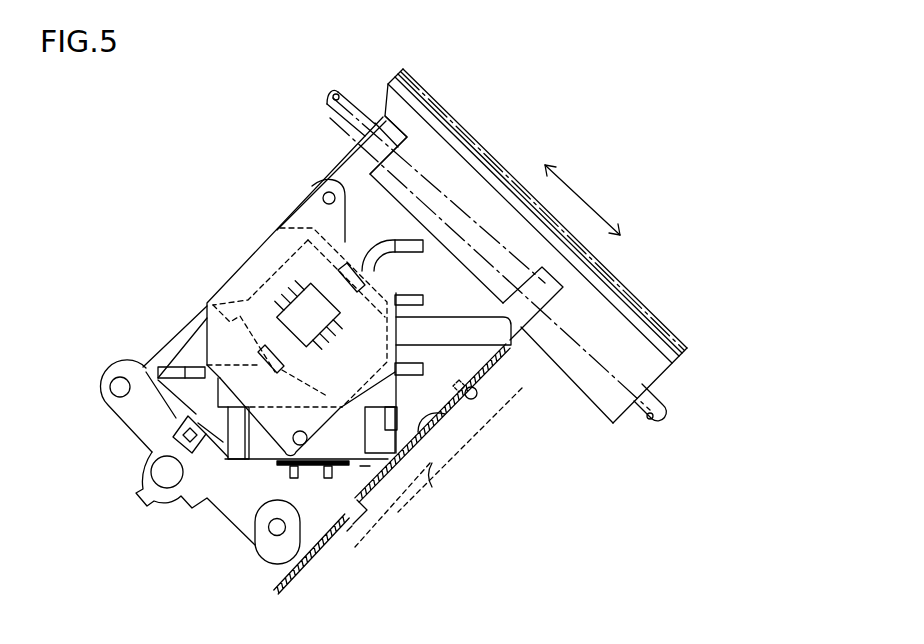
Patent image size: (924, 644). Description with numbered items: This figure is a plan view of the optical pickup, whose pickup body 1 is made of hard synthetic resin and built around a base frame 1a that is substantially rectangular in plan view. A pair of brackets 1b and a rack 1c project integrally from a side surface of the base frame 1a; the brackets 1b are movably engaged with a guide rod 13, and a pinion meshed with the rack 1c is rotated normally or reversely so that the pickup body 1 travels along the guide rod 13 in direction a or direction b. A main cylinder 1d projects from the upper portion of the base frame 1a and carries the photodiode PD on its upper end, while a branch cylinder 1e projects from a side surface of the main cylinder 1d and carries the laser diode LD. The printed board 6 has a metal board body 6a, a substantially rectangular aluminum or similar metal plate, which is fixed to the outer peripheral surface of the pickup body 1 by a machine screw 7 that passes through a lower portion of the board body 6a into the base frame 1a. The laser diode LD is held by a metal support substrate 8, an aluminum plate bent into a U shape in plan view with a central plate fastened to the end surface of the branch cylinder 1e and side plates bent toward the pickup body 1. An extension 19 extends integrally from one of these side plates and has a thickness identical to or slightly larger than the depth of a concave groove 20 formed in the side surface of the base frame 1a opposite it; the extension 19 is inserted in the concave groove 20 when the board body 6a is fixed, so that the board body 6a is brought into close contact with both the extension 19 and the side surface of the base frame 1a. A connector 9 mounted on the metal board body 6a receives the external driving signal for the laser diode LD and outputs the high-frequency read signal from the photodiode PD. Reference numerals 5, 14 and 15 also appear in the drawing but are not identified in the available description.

The pickup body 1 is at (229, 261).
The base frame 1a is at (220, 503).
The brackets 1b is at (383, 117).
The rack 1c is at (460, 123).
The main cylinder 1d is at (230, 302).
The branch cylinder 1e is at (238, 424).
The holder member 5 is at (496, 332).
The printed board 6 is at (405, 454).
The metal board body 6a is at (287, 572).
The machine screw 7 is at (507, 398).
The metal support substrate 8 is at (365, 468).
The connector 9 is at (432, 463).
The guide rod 13 is at (327, 98).
The holding plate 14 is at (368, 504).
The end portion 15 is at (353, 527).
The extension 19 is at (461, 395).
The concave groove 20 is at (437, 415).
The photodiode PD is at (288, 292).
The laser diode LD is at (285, 467).
The direction a is at (577, 188).
The direction b is at (623, 240).